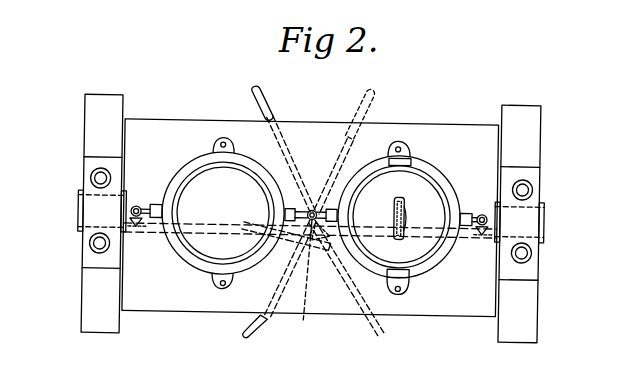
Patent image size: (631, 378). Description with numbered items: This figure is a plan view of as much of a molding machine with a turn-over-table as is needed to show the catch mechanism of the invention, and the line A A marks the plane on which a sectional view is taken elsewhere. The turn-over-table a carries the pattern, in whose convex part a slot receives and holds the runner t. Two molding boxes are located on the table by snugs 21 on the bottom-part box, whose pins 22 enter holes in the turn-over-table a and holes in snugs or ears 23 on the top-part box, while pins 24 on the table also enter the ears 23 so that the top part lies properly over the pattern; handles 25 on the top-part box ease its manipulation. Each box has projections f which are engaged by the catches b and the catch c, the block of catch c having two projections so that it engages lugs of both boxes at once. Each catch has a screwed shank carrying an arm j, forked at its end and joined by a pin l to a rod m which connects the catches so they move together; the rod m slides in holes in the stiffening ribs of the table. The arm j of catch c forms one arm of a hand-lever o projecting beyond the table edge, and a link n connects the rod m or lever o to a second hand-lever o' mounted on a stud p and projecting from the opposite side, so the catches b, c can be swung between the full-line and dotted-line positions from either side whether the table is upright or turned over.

The section line A is at (66, 217).
The turn-over-table a is at (310, 218).
The catch b is at (136, 208).
The snug, ear or projection f is at (154, 205).
The catch c is at (312, 210).
The rod m is at (153, 229).
The link n is at (284, 236).
The pin l is at (322, 240).
The hand-lever o is at (283, 149).
The hand-lever o' is at (309, 213).
The stud p is at (341, 279).
The arm j is at (338, 235).
The runner t is at (403, 208).
The snug 21 is at (225, 145).
The pin 22 is at (231, 152).
The snug or ear 23 is at (408, 150).
The pin 24 is at (398, 145).
The handle 25 is at (411, 160).